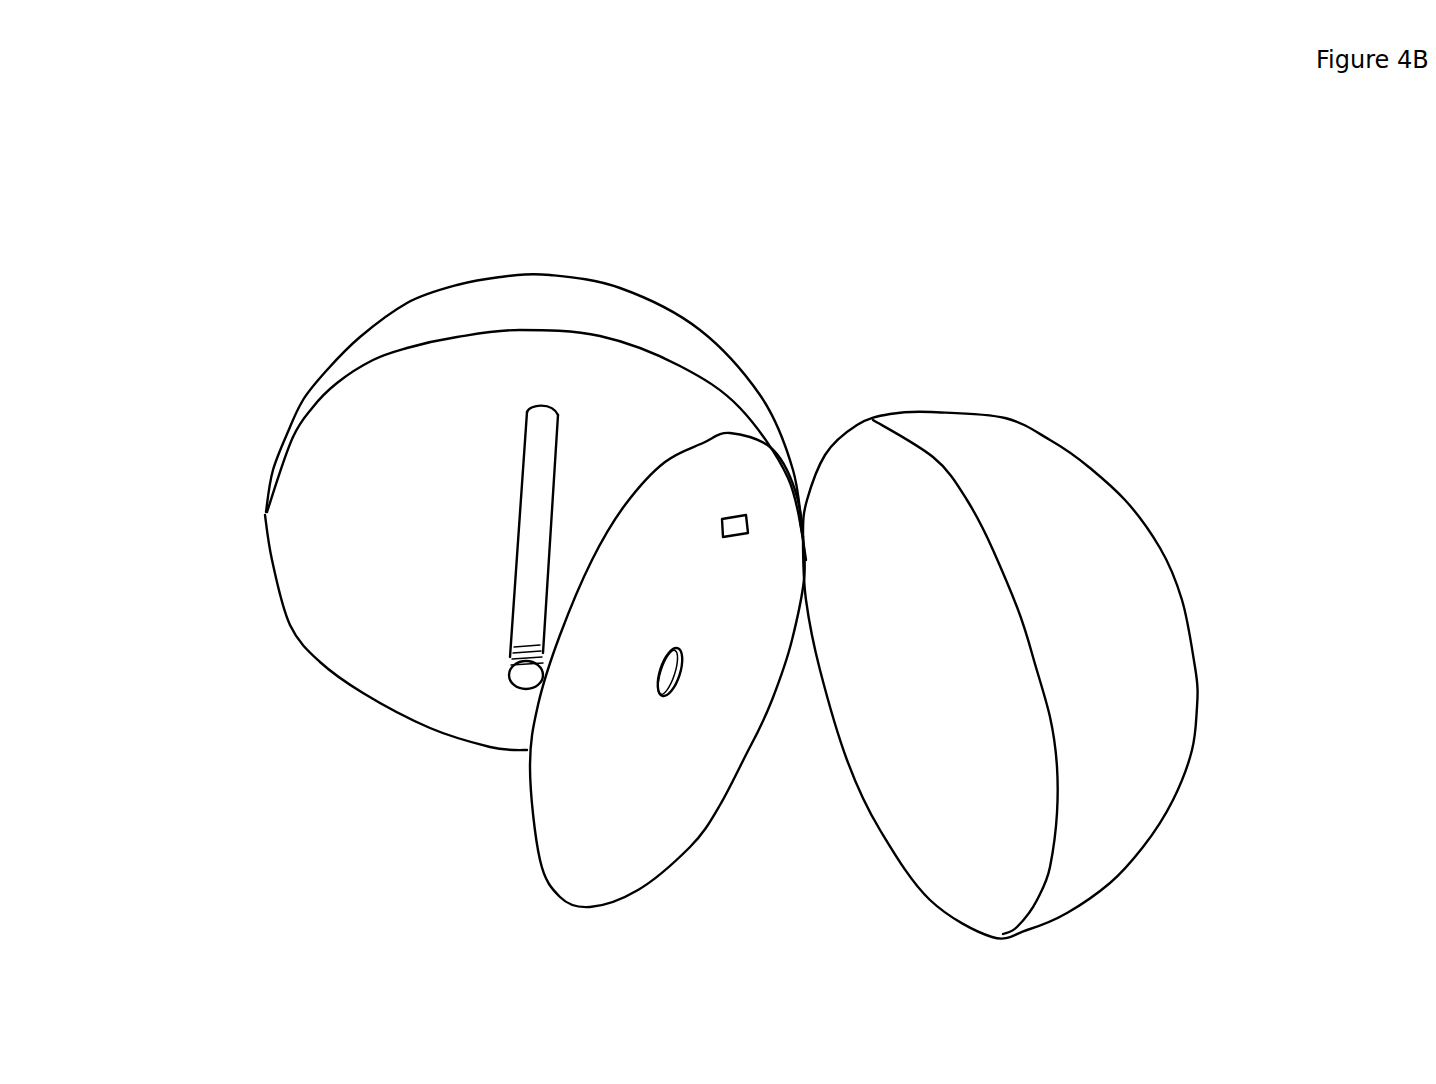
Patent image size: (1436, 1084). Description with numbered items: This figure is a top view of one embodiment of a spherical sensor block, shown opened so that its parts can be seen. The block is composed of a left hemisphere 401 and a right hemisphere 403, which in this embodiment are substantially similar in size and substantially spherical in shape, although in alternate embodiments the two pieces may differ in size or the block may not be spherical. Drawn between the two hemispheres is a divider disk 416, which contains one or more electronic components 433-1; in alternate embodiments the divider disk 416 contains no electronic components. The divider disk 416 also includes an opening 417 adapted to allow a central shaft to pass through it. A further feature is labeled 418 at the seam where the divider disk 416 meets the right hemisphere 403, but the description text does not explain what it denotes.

The left hemisphere 401 is at (273, 597).
The right hemisphere 403 is at (1120, 493).
The divider disk 416 is at (638, 890).
The opening 417 is at (667, 673).
The junction / seam between halves 418 is at (802, 600).
The electronic component 433-1 is at (738, 515).